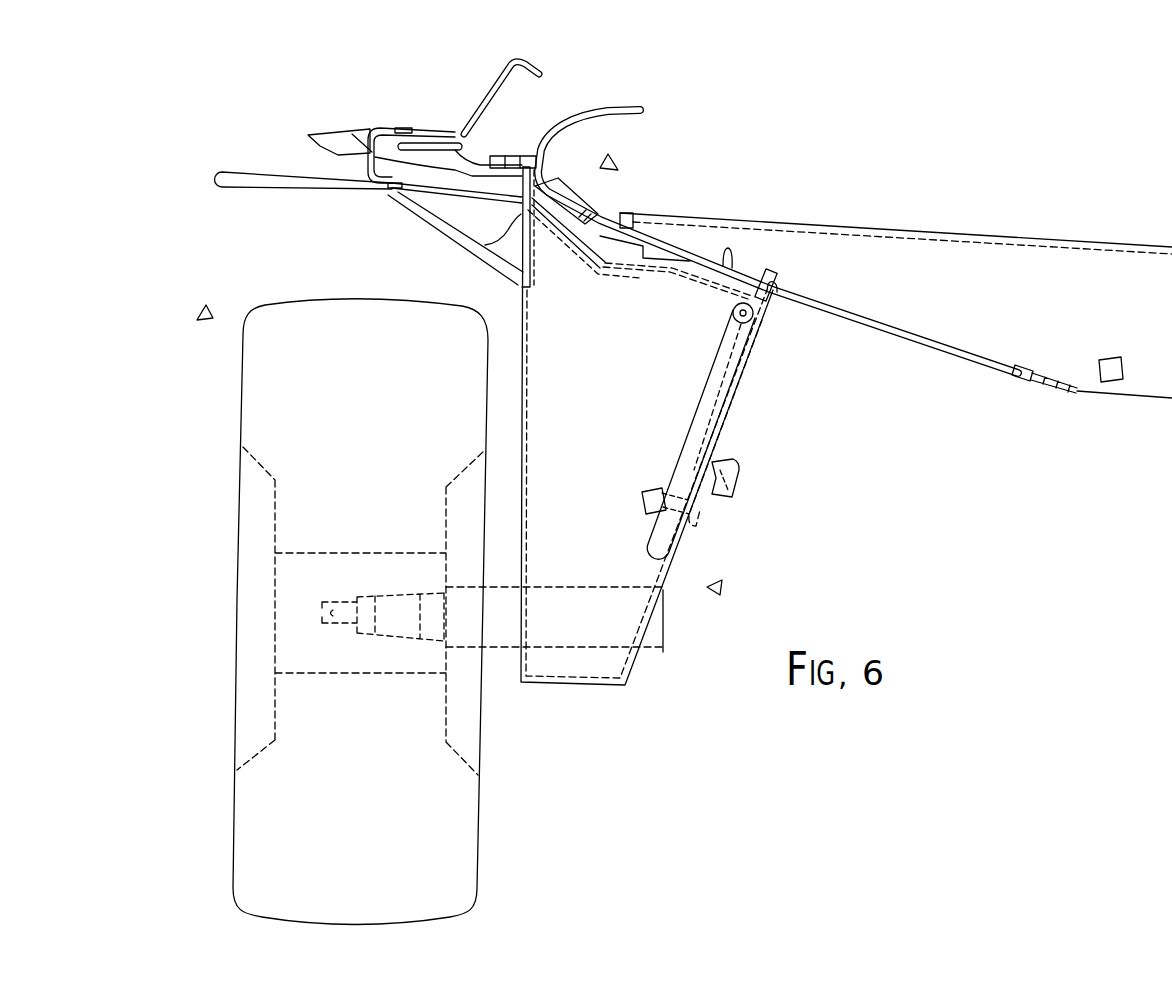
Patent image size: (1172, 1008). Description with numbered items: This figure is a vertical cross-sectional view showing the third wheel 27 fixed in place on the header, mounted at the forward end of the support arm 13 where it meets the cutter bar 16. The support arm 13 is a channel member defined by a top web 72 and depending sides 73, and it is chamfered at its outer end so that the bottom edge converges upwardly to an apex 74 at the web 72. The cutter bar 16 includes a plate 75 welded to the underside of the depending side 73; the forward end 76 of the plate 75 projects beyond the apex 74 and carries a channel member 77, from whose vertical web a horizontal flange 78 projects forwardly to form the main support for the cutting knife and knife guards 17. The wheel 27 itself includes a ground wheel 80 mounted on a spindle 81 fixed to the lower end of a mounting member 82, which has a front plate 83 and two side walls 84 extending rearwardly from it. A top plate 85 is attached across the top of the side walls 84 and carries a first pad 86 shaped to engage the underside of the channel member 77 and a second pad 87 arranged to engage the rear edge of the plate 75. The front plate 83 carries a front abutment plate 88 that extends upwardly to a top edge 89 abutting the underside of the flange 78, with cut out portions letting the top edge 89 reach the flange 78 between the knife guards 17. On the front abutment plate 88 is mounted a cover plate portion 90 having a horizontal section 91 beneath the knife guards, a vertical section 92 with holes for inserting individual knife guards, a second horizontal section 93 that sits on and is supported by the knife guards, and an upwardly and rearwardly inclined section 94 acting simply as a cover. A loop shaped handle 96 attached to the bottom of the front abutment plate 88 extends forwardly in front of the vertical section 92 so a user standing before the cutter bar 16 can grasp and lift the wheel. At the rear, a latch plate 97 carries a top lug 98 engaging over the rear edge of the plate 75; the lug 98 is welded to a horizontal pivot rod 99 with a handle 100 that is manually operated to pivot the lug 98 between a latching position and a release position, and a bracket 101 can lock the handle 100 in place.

The support arm 13 is at (928, 253).
The cutter bar 16 is at (617, 162).
The cutting knife / knife guards 17 is at (353, 136).
The third wheel 27 is at (200, 312).
The top web 72 is at (1007, 238).
The depending sides 73 is at (1050, 280).
The apex 74 is at (627, 214).
The plate 75 is at (690, 254).
The forward end 76 is at (570, 185).
The channel member 77 is at (633, 105).
The horizontal flange 78 is at (492, 155).
The ground wheel 80 is at (258, 397).
The spindle 81 is at (503, 640).
The mounting member 82 is at (720, 588).
The front plate 83 is at (532, 387).
The side walls 84 is at (640, 668).
The top plate 85 is at (637, 273).
The first pad 86 is at (572, 218).
The second pad 87 is at (712, 278).
The front abutment plate 88 is at (523, 212).
The top edge 89 is at (540, 148).
The cover plate portion 90 is at (387, 193).
The horizontal section 91 is at (418, 197).
The vertical section 92 is at (365, 150).
The second horizontal section 93 is at (423, 130).
The inclined section 94 is at (502, 62).
The loop shaped handle 96 is at (245, 186).
The rear latch plate 97 is at (784, 290).
The top lug 98 is at (764, 272).
The horizontal pivot rod 99 is at (733, 313).
The handle 100 is at (713, 403).
The bracket 101 is at (640, 493).